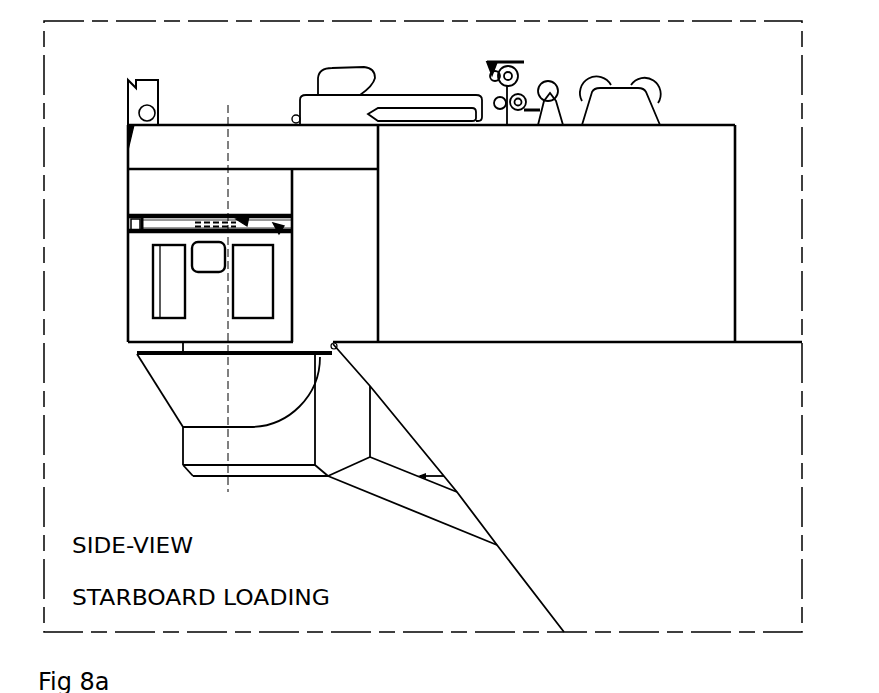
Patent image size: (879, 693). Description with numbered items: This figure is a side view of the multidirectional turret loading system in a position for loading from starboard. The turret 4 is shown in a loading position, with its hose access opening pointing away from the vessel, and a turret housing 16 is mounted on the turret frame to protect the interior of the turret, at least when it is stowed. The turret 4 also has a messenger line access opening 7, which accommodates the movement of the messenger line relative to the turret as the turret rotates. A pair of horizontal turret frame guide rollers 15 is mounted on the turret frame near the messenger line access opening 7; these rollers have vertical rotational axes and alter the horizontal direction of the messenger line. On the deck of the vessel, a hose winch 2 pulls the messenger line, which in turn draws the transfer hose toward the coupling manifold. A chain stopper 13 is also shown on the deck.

The hose winch 2 is at (620, 100).
The chain stopper 13 is at (387, 96).
The turret 4 is at (210, 207).
The turret housing 16 is at (210, 207).
The turret frame guide rollers 15 is at (283, 213).
The messenger line access opening 7 is at (281, 229).